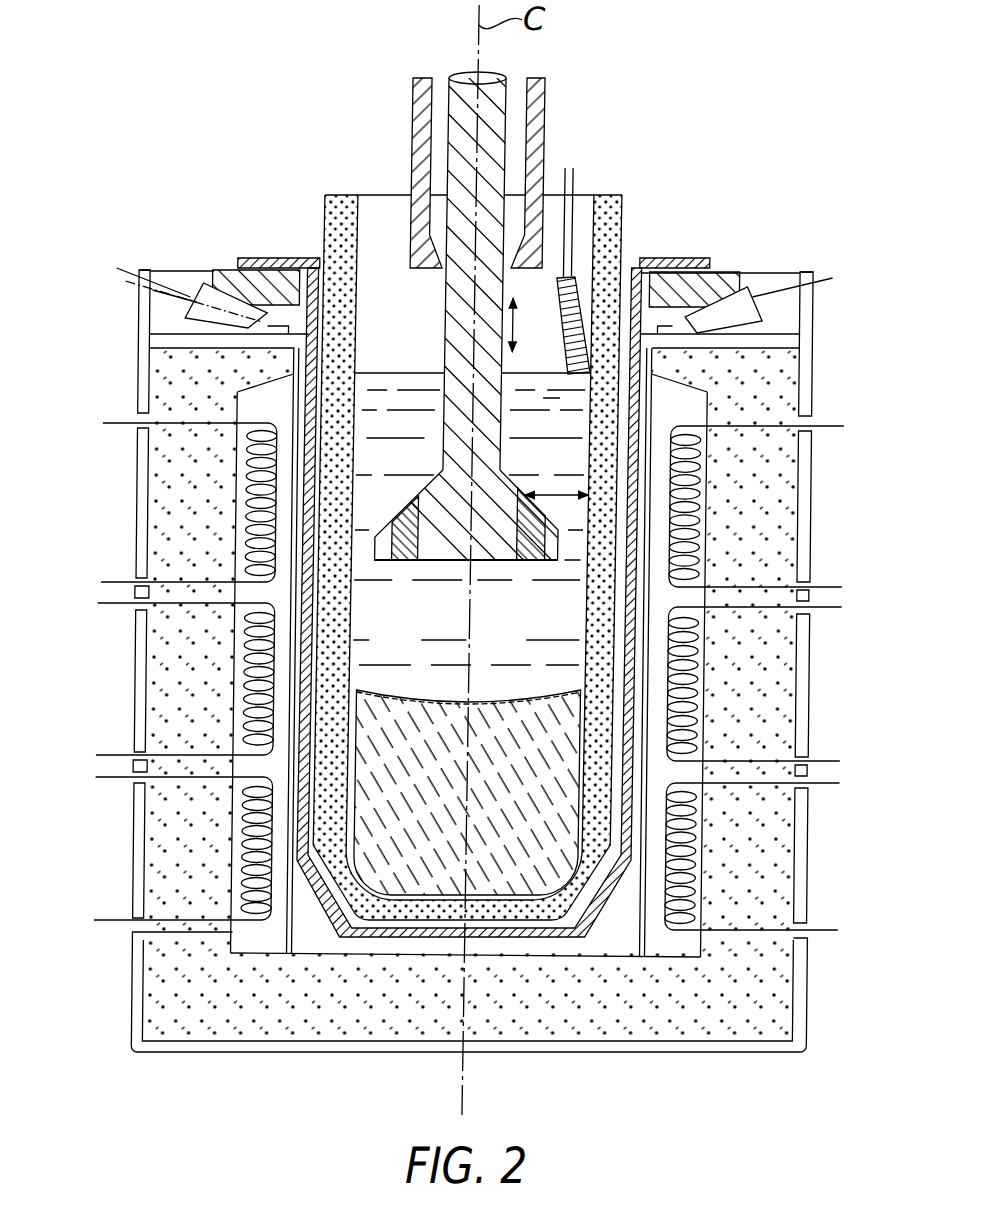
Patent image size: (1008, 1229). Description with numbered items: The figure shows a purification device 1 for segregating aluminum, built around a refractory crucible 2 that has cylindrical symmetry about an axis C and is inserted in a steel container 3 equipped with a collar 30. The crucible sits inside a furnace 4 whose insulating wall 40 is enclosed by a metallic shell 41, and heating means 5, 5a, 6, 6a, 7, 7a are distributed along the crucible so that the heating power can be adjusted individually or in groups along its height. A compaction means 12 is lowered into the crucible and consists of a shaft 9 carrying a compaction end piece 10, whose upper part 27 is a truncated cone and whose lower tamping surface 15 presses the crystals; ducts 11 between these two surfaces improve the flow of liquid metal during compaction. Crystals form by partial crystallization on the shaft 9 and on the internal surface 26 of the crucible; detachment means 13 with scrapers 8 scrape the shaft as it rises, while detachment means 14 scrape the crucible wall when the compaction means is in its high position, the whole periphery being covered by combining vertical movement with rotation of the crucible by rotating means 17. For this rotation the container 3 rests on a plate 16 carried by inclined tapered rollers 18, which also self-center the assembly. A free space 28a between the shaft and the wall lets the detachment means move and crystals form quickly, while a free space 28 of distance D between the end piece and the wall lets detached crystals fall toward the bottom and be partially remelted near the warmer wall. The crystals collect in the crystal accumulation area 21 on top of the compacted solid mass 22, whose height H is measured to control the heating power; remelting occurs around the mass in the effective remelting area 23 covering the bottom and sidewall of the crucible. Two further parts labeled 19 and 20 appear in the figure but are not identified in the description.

The purification device 1 is at (734, 163).
The refractory crucible 2 is at (622, 209).
The steel container 3 is at (560, 942).
The furnace 4 is at (716, 1066).
The crucible heating means 5 is at (698, 510).
The crucible heating means 5a is at (250, 528).
The crucible heating means 6 is at (717, 697).
The crucible heating means 6a is at (251, 724).
The crucible heating means 7 is at (715, 886).
The crucible heating means 7a is at (253, 888).
The scrapers 8 is at (542, 248).
The shaft 9 is at (456, 135).
The compaction end piece 10 is at (413, 499).
The ducts 11 is at (394, 514).
The compaction means 12 is at (432, 319).
The detachment means 13 is at (546, 156).
The detachment means 14 is at (570, 290).
The tamping surface 15 is at (457, 568).
The plate 16 is at (475, 259).
The means of rotating the crucible 17 is at (761, 287).
The inclined tapered rollers 18 is at (696, 335).
The cover plate 19 is at (269, 262).
The melt 20 is at (528, 641).
The crystal accumulation area 21 is at (488, 691).
The solid mass 22 is at (537, 788).
The effective remelting area 23 is at (352, 860).
The internal surface of the crucible 26 is at (362, 221).
The upper part of the end piece 27 is at (534, 490).
The free space 28 is at (580, 563).
The free space 28a is at (557, 398).
The collar 30 is at (682, 258).
The insulating wall 40 is at (214, 1004).
The metallic shell 41 is at (146, 993).